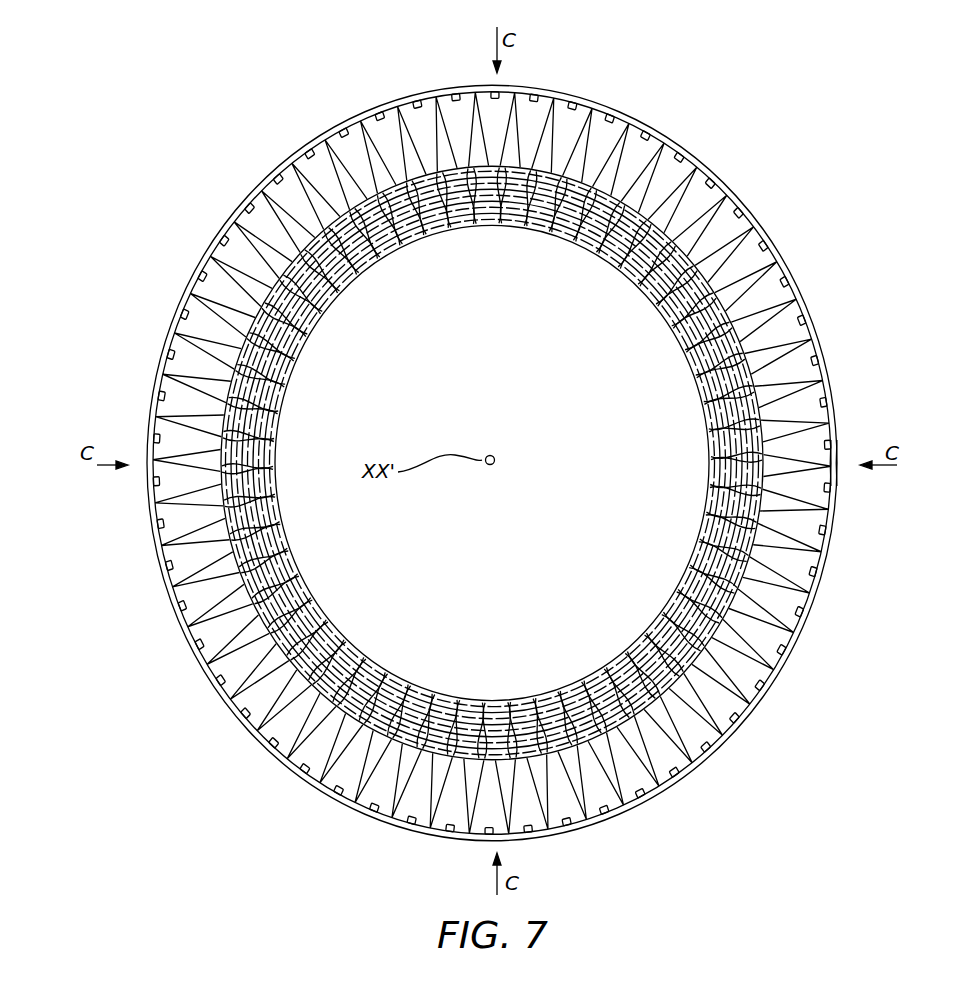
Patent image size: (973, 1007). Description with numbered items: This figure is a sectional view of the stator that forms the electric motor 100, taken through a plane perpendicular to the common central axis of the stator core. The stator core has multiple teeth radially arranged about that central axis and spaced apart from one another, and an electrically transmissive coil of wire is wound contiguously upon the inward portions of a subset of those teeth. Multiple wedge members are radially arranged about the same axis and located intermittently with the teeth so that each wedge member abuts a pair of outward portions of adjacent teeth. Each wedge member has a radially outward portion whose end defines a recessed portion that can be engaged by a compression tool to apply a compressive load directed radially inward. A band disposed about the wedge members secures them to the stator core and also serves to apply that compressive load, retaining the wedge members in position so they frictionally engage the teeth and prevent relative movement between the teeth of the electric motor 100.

The electric motor 100 is at (850, 141).